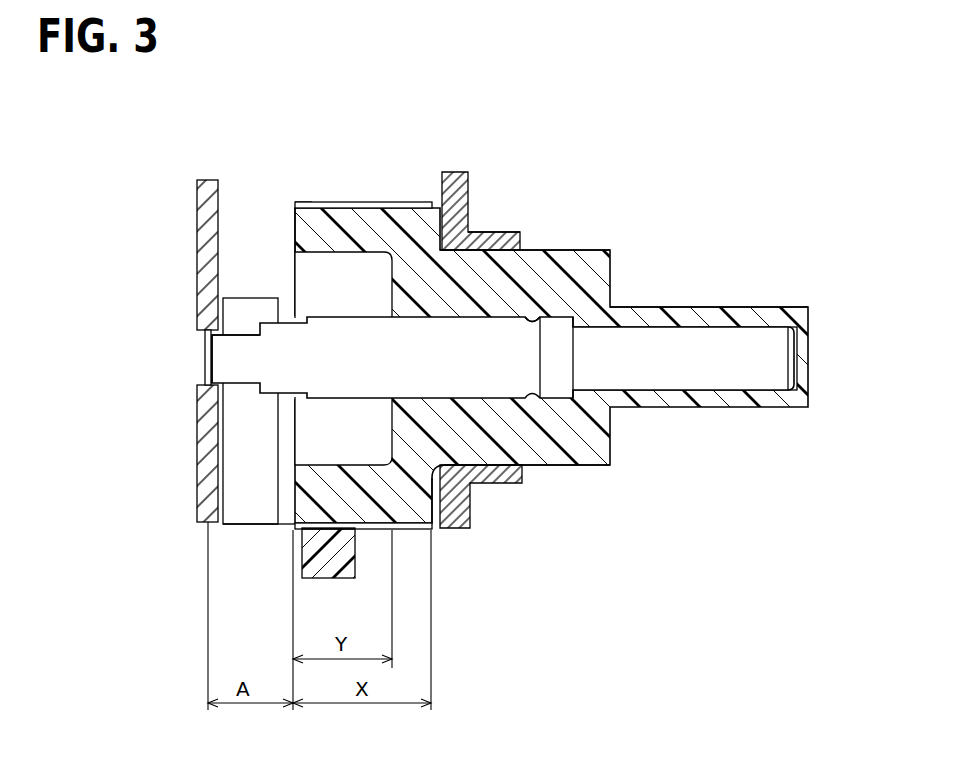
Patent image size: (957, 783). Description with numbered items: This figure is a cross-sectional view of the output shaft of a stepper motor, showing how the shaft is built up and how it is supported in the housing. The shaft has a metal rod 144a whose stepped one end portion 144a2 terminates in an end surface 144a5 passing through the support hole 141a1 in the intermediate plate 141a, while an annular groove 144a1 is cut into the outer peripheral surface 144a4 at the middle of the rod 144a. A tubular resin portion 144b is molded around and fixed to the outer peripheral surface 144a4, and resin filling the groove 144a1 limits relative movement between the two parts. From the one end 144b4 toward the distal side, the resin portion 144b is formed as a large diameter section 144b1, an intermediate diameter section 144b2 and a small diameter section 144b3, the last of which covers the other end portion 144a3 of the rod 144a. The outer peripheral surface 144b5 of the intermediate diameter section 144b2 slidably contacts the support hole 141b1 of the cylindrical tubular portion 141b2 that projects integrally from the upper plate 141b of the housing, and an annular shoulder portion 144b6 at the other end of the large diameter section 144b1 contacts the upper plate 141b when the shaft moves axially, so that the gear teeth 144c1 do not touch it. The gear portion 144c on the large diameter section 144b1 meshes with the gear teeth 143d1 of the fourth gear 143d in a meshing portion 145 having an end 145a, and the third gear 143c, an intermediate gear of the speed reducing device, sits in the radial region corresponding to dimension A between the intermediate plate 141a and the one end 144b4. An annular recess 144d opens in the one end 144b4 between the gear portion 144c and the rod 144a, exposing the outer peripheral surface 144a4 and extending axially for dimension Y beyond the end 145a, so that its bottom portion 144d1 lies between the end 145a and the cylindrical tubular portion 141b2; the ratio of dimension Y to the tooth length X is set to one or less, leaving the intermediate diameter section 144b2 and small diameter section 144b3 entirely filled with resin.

The intermediate plate 141a is at (210, 262).
The support hole 141a1 is at (203, 352).
The upper plate 141b is at (462, 182).
The support hole 141b1 is at (522, 247).
The cylindrical tubular portion 141b2 is at (502, 486).
The third gear 143c is at (252, 440).
The fourth gear 143d is at (296, 566).
The gear teeth 143d1 is at (302, 548).
The rod 144a is at (657, 370).
The groove 144a1 is at (538, 396).
The one end portion 144a2 is at (220, 358).
The other end portion 144a3 is at (772, 368).
The outer peripheral surface 144a4 is at (525, 308).
The end surface 144a5 is at (211, 365).
The resin portion 144b is at (603, 447).
The large diameter section 144b1 is at (300, 201).
The intermediate diameter section 144b2 is at (548, 248).
The small diameter section 144b3 is at (720, 307).
The one end 144b4 is at (292, 262).
The outer peripheral surface 144b5 is at (537, 467).
The shoulder portion 144b6 is at (478, 468).
The gear portion 144c is at (372, 202).
The gear teeth 144c1 is at (418, 202).
The recess 144d is at (370, 291).
The bottom portion 144d1 is at (393, 437).
The meshing portion 145 is at (302, 568).
The end 145a is at (347, 532).